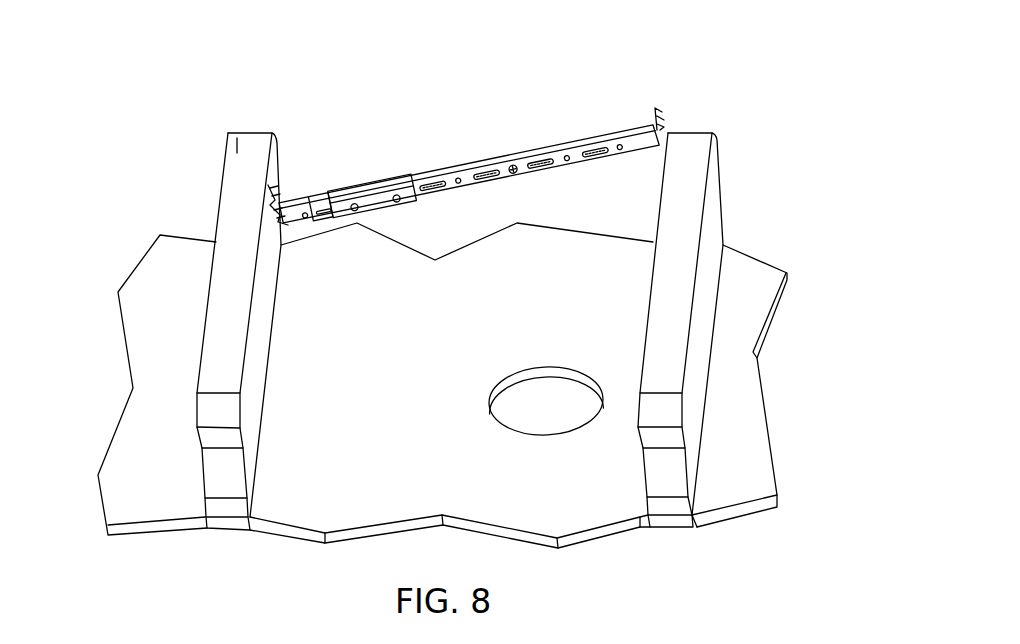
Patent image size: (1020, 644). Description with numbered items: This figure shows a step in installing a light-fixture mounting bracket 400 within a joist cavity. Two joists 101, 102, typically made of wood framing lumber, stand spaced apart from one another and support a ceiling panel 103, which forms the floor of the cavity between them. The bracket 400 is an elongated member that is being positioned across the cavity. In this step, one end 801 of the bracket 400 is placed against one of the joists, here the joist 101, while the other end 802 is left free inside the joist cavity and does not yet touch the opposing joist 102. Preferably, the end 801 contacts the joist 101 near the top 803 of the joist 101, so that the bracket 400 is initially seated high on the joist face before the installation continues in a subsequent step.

The joist 101 is at (230, 192).
The joist 102 is at (712, 136).
The ceiling panel 103 is at (150, 257).
The bracket 400 is at (448, 167).
The end of the bracket 801 is at (312, 168).
The other end of the bracket 802 is at (626, 110).
The top of the joist 803 is at (242, 142).